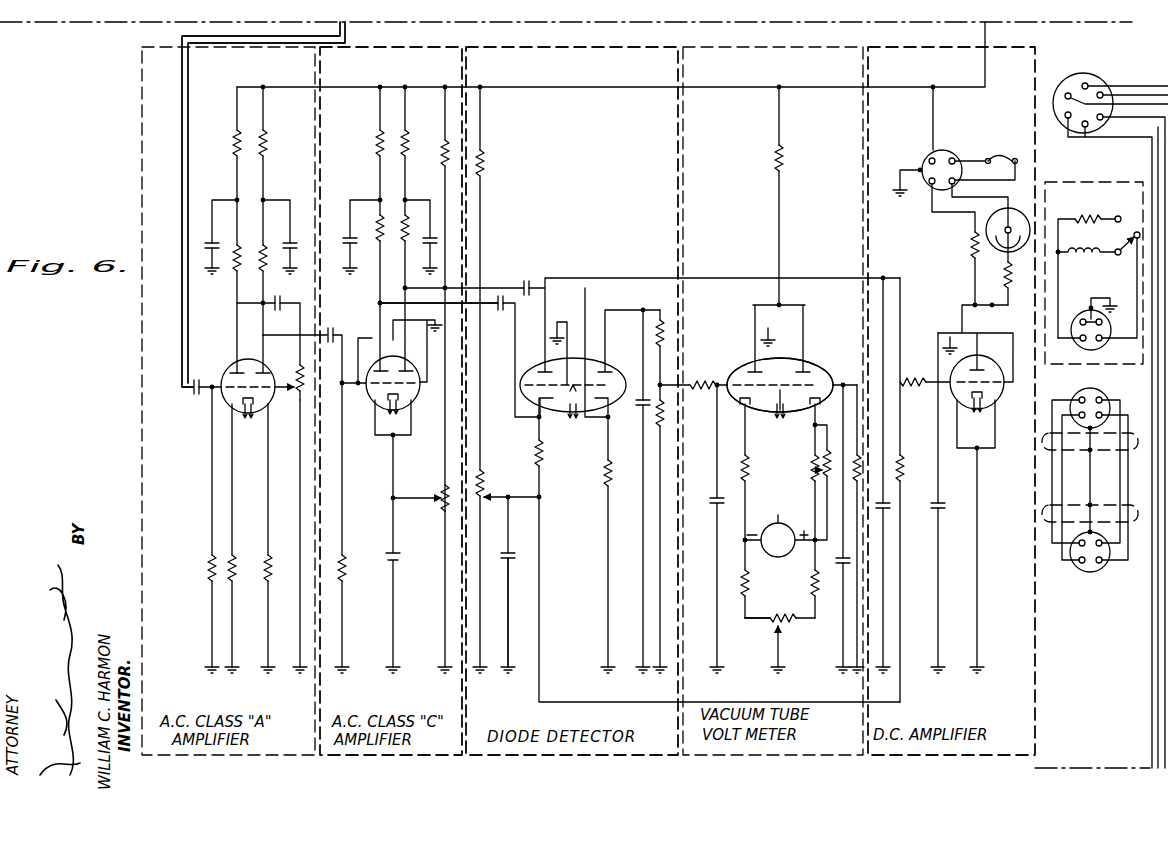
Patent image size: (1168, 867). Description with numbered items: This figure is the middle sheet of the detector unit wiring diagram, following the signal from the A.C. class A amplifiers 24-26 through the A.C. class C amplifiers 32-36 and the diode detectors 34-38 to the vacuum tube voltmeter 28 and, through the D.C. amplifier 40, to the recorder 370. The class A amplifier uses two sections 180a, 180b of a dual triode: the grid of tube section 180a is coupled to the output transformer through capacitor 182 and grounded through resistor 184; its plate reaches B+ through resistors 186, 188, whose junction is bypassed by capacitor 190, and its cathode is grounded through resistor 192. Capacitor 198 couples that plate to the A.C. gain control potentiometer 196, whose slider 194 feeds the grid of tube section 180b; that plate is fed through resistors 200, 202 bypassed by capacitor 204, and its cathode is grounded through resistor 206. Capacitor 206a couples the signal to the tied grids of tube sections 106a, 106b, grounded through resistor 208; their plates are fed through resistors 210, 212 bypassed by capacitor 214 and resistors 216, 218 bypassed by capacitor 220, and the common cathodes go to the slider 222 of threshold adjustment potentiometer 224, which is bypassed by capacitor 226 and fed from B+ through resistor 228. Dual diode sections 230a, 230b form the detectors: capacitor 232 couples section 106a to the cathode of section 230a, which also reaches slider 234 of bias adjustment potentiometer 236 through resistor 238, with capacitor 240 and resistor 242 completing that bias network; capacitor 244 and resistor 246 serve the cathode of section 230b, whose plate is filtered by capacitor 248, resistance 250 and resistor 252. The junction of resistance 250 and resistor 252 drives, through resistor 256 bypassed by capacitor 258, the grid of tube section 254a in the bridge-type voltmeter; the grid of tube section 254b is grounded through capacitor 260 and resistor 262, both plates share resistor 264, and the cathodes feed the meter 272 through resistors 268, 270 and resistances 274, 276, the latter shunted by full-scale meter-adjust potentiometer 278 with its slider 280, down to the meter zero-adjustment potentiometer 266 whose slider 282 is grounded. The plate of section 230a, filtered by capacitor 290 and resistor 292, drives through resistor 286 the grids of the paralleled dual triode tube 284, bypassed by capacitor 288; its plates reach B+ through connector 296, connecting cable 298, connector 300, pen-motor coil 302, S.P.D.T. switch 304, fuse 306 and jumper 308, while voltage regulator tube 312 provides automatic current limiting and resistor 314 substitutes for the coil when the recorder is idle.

The A.C. class A amplifiers 24-26 is at (135, 150).
The A.C. class C amplifiers 32-36 is at (372, 120).
The diode detectors 34-38 is at (641, 120).
The D.C. amplifier 40 is at (913, 146).
The vacuum tube voltmeter 28 is at (812, 300).
The recorder 370 is at (1058, 180).
The 47K resistor 188 is at (233, 143).
The 100K resistor 186 is at (233, 280).
The 0.1 mfd. capacitor 190 is at (210, 243).
The 47K resistor 202 is at (267, 143).
The 100K resistor 200 is at (268, 255).
The 0.1 mfd. capacitor 204 is at (292, 240).
The 0.001 capacitor 198 is at (277, 300).
The slider 194 is at (300, 395).
The A.C. gain control potentiometer 196 is at (300, 440).
The tube section 180a is at (238, 366).
The tube section 180b is at (262, 368).
The 0.01 mfd. capacitor 182 is at (196, 396).
The 1M resistor 184 is at (208, 560).
The 2700 ohm resistor 192 is at (234, 556).
The 2700 ohm resistor 206 is at (272, 558).
The 47K resistor 212 is at (376, 165).
The 100K resistor 210 is at (376, 225).
The 0.1 mfd. capacitor 214 is at (343, 240).
The 47K resistor 218 is at (410, 143).
The 50K resistor 228 is at (443, 168).
The 0.1 mfd. capacitor 220 is at (460, 230).
The 100K resistor 216 is at (460, 248).
The 0.001 mfd. capacitor 206a is at (338, 332).
The tube section 106a is at (372, 362).
The tube section 106b is at (411, 412).
The threshold adjustment potentiometer 224 is at (450, 482).
The slider 222 is at (428, 505).
The 1M resistor 208 is at (346, 582).
The 8 mfd. capacitor 226 is at (403, 565).
The 50K resistor 242 is at (485, 162).
The bias adjustment potentiometer 236 is at (484, 475).
The slider 234 is at (508, 520).
The 0.1 capacitor 240 is at (505, 570).
The 0.01 mfd. capacitor 232 is at (500, 295).
The 0.01 mfd. capacitor 244 is at (530, 285).
The tube section 230a is at (528, 375).
The tube section 230b is at (607, 370).
The 470K resistor 238 is at (543, 450).
The 470K resistor 246 is at (606, 480).
The bypass and filter capacitor 248 is at (638, 415).
The 3.3M resistance 250 is at (660, 318).
The 240K resistor 252 is at (665, 435).
The 1M resistor 256 is at (703, 380).
The 47K resistor 264 is at (785, 163).
The tube section 254a is at (752, 362).
The tube section 254b is at (812, 360).
The resistor 270 is at (722, 460).
The 0.0068 mfd. capacitor 258 is at (712, 505).
The full-scale meter-adjust potentiometer 278 is at (812, 460).
The resistance 276 is at (822, 472).
The slider 280 is at (832, 448).
The meter 272 is at (777, 520).
The resistor 268 is at (751, 580).
The 0.0068 mfd. capacitor 260 is at (818, 578).
The resistance 274 is at (792, 612).
The meter zero-adjustment potentiometer 266 is at (768, 618).
The slider 282 is at (782, 635).
The 1M resistor 262 is at (862, 460).
The 5.1M resistor 292 is at (904, 478).
The bypass and filter capacitor 290 is at (890, 505).
The 0.0068 mfd. capacitor 288 is at (946, 505).
The 1M resistor 286 is at (908, 378).
The dual triode tube 284 is at (1002, 390).
The connector 296 is at (947, 150).
The fuse 306 is at (1004, 156).
The voltage regulator tube 312 is at (1028, 196).
The connector 300 is at (1090, 350).
The 1500-ohm resistor 314 is at (1076, 218).
The pen-motor coil 302 is at (1070, 252).
The S.P.D.T. switch 304 is at (1131, 256).
The jumper 308 is at (1080, 307).
The connecting cable 298 is at (1117, 566).